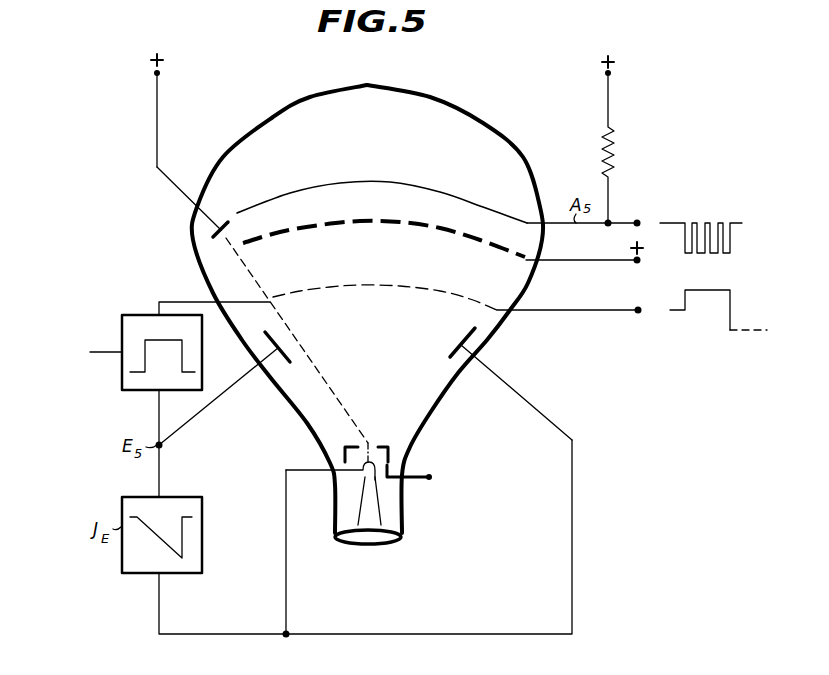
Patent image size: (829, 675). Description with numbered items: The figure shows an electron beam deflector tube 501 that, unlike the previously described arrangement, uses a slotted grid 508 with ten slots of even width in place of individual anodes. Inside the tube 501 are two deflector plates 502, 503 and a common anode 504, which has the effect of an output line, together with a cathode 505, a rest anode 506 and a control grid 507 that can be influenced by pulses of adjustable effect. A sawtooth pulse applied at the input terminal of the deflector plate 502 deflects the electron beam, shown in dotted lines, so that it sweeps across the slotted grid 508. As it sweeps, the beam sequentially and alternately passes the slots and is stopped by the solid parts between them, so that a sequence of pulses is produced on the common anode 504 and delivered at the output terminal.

The electron beam deflector tube 501 is at (243, 140).
The deflector plate 502 is at (268, 380).
The deflector plate 503 is at (474, 338).
The common anode 504 is at (384, 183).
The cathode 505 is at (376, 480).
The rest anode 506 is at (212, 236).
The control grid 507 is at (367, 290).
The slotted grid 508 is at (377, 226).